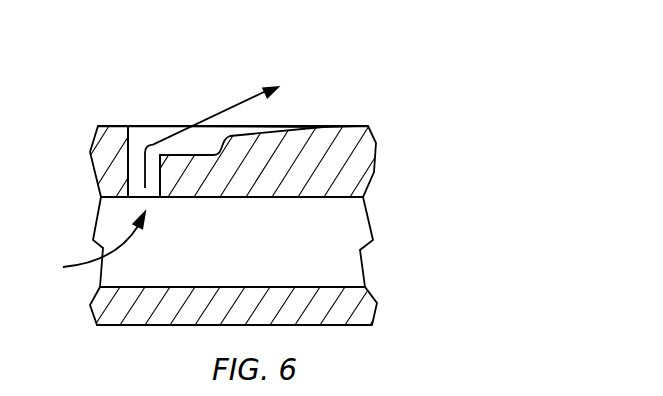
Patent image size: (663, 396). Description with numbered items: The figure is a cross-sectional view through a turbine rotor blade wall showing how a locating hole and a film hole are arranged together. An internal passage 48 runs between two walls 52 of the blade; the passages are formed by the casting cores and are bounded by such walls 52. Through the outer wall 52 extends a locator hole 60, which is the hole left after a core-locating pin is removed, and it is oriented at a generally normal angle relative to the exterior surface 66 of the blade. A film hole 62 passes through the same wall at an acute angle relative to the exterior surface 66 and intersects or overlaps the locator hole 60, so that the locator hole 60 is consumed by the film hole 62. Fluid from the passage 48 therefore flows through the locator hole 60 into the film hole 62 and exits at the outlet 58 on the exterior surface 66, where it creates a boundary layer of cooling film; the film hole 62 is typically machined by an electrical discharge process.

The passage 48 is at (249, 252).
The wall 52 is at (373, 143).
The outlet 58 is at (195, 100).
The locator hole 60 is at (133, 145).
The film hole 62 is at (230, 150).
The exterior surface 66 is at (325, 126).